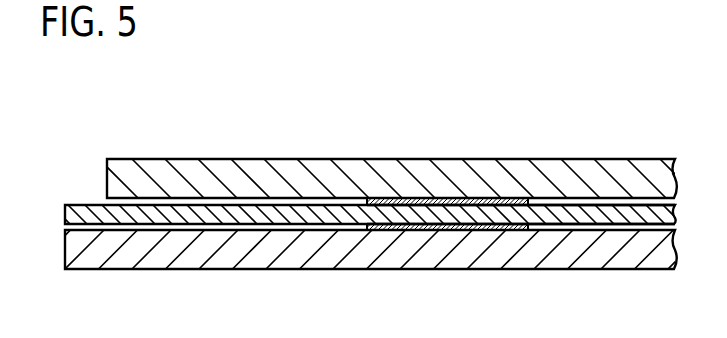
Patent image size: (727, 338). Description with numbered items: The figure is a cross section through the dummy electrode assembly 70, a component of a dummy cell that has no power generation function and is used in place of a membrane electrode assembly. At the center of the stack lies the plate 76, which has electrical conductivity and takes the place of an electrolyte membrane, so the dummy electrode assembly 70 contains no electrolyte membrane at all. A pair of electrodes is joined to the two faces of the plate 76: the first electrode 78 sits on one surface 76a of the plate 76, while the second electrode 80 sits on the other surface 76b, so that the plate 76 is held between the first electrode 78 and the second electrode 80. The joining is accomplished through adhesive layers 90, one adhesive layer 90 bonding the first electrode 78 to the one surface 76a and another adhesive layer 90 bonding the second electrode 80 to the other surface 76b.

The dummy electrode assembly 70 is at (127, 91).
The plate 76 is at (85, 212).
The one surface of the plate 76a is at (555, 204).
The other surface of the plate 76b is at (572, 225).
The first electrode 78 is at (321, 175).
The second electrode 80 is at (286, 258).
The adhesive layer 90 is at (482, 201).